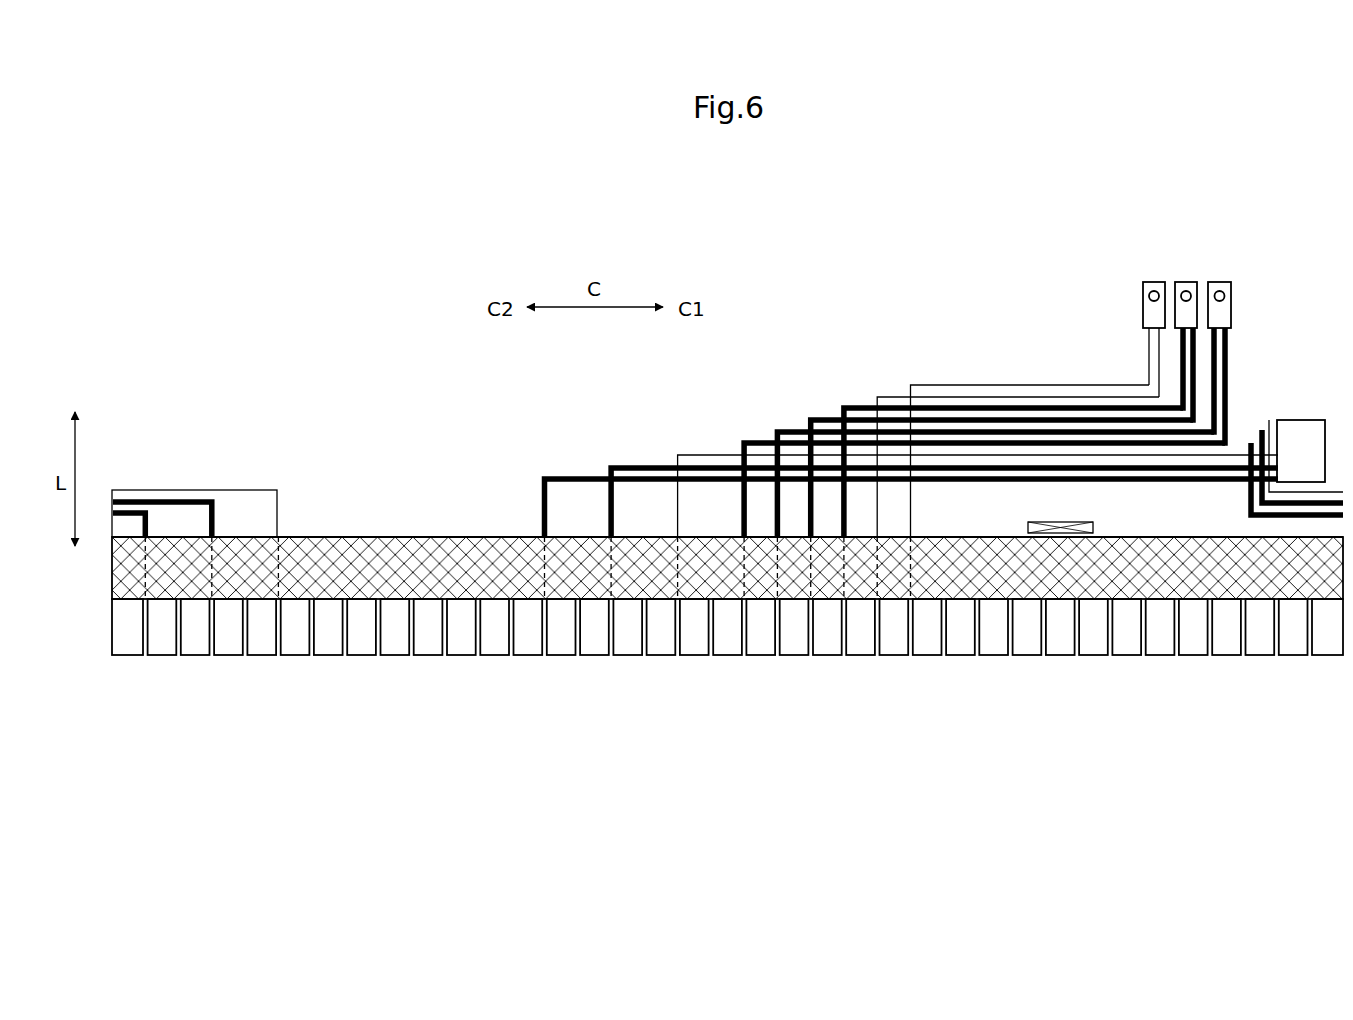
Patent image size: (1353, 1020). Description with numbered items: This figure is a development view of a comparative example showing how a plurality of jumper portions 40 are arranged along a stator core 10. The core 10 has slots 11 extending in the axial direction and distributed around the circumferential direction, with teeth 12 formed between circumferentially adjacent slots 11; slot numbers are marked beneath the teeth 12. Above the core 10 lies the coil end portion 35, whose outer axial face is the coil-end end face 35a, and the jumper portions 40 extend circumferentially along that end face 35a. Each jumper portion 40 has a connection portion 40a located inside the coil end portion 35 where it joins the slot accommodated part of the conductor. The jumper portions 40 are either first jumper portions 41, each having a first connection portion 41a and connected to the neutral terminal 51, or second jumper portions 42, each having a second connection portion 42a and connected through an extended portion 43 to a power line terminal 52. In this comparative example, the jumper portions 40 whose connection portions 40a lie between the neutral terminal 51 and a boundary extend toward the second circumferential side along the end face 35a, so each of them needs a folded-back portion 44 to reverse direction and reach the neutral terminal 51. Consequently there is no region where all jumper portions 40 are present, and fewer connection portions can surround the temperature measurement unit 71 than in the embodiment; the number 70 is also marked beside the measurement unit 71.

The core 10 is at (110, 640).
The slots 11 is at (478, 628).
The teeth 12 is at (530, 645).
The coil end portion 35 is at (110, 539).
The coil-end end face 35a is at (405, 535).
The jumper portions 40 is at (695, 416).
The connection portion 40a is at (480, 625).
The first jumper portions 41 is at (242, 490).
The first connection portion 41a is at (140, 553).
The second jumper portions 42 is at (792, 430).
The second connection portion 42a is at (742, 568).
The extended portion 43 is at (1183, 368).
The folded-back portion 44 is at (1244, 438).
The neutral terminal 51 is at (1305, 428).
The power line terminals 52 is at (1154, 282).
The detection unit 70 is at (1121, 517).
The temperature measurement unit 71 is at (1093, 527).